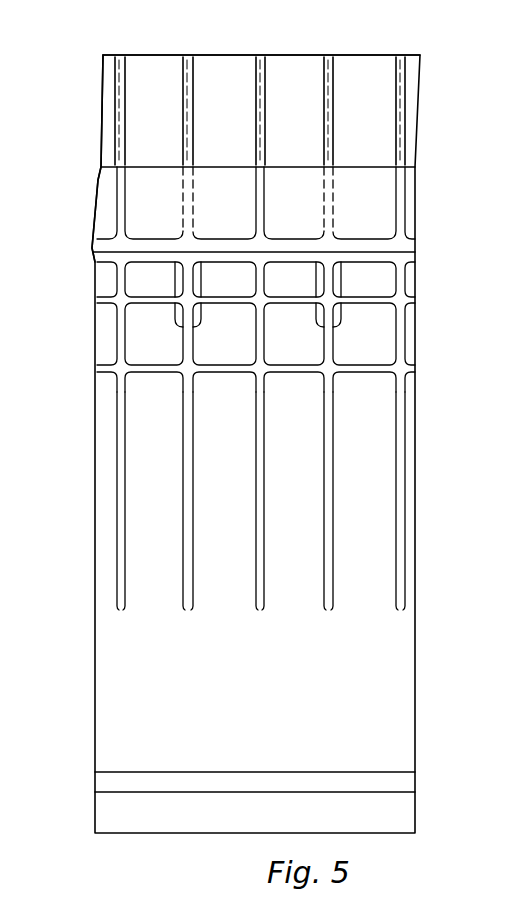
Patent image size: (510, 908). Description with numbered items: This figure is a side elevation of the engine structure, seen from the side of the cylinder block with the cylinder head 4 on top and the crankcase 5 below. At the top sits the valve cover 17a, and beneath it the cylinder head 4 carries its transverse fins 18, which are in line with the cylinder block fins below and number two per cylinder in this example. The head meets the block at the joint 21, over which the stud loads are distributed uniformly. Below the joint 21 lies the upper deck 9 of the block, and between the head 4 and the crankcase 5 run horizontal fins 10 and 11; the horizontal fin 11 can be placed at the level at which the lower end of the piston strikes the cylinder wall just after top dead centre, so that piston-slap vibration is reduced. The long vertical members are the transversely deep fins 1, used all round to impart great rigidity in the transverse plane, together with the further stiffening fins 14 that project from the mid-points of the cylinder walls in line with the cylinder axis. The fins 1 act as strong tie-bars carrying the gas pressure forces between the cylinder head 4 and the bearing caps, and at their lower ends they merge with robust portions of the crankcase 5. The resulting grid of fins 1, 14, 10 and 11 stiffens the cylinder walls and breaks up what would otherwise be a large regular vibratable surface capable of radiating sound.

The valve cover 17a is at (288, 55).
The cylinder head 4 is at (86, 205).
The transverse fins 18 is at (129, 199).
The joint 21 is at (415, 256).
The upper deck 9 is at (97, 258).
The horizontal fin 10 is at (97, 299).
The horizontal fin 11 is at (97, 368).
The fins 1 is at (131, 521).
The further stiffening fins 14 is at (198, 521).
The crankcase 5 is at (247, 727).